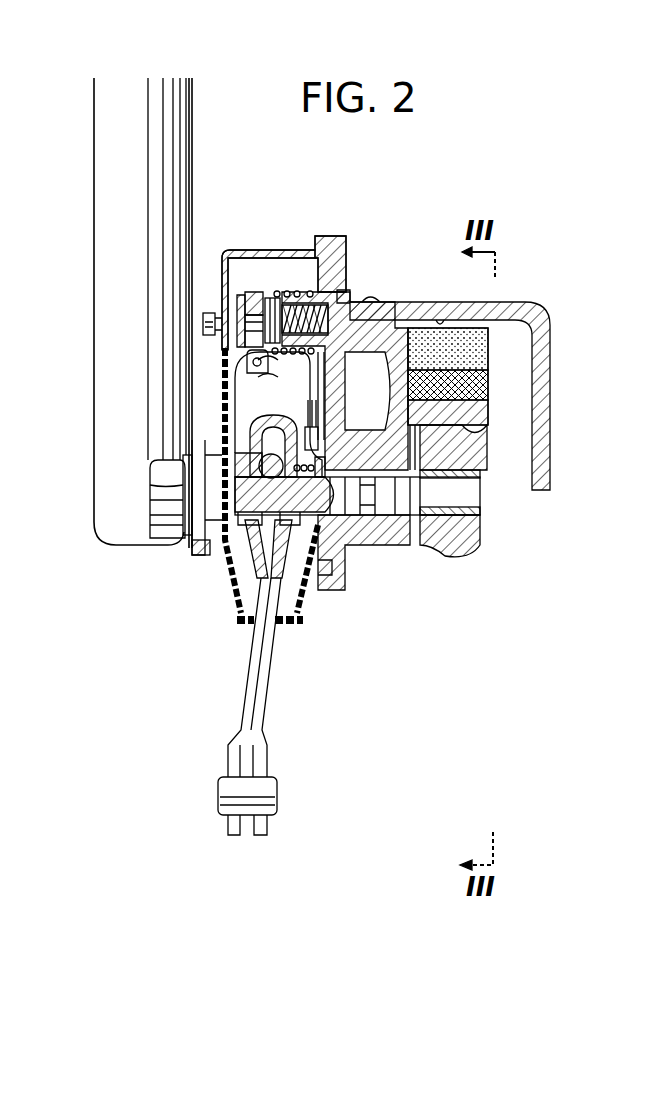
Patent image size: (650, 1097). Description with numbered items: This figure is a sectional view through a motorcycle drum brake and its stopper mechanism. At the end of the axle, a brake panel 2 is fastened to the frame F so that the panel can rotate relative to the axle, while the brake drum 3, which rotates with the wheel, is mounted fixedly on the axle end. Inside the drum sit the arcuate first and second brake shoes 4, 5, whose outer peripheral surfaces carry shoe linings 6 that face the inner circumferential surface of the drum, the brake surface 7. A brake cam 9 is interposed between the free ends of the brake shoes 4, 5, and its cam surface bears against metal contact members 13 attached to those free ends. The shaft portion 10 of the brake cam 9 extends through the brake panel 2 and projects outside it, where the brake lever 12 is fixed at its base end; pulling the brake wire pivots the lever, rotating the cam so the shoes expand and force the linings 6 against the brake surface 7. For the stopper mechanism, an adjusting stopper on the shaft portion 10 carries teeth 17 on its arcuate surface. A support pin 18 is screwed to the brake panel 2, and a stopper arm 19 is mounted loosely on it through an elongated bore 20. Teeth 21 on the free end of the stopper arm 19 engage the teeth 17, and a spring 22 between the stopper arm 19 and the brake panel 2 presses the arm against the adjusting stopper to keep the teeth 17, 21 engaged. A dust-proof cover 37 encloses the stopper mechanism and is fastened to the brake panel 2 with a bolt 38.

The frame F is at (205, 164).
The brake panel 2 is at (378, 452).
The brake drum 3 is at (538, 372).
The first brake shoe 4 is at (470, 445).
The second brake shoe 5 is at (468, 548).
The shoe lining 6 is at (418, 328).
The brake surface 7 is at (440, 320).
The brake cam 9 is at (482, 492).
The shaft portion 10 is at (318, 500).
The brake lever 12 is at (265, 698).
The metal contact member 13 is at (482, 518).
The teeth 17 is at (275, 395).
The support pin 18 is at (315, 322).
The stopper arm 19 is at (258, 374).
The elongated bore 20 is at (270, 374).
The teeth 21 is at (265, 381).
The spring 22 is at (302, 298).
The dust-proof cover 37 is at (238, 256).
The bolt 38 is at (212, 313).